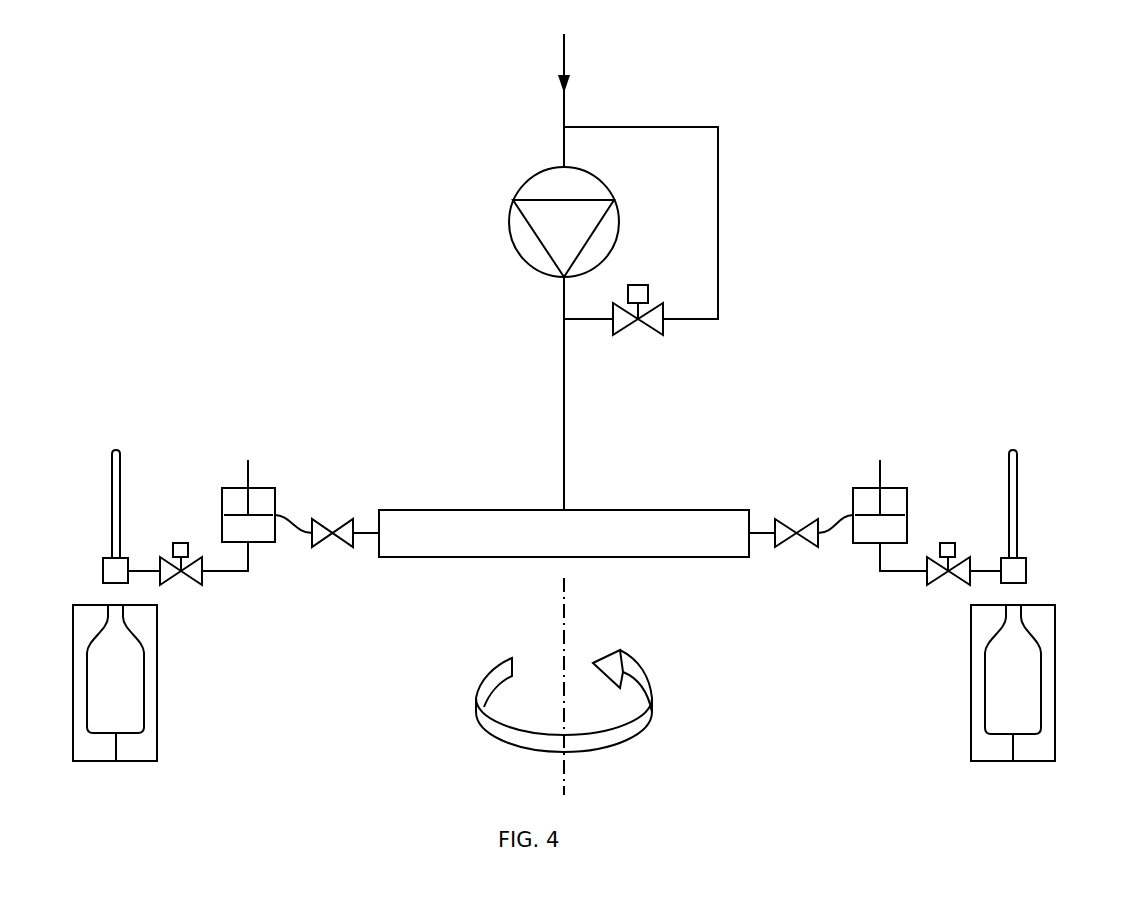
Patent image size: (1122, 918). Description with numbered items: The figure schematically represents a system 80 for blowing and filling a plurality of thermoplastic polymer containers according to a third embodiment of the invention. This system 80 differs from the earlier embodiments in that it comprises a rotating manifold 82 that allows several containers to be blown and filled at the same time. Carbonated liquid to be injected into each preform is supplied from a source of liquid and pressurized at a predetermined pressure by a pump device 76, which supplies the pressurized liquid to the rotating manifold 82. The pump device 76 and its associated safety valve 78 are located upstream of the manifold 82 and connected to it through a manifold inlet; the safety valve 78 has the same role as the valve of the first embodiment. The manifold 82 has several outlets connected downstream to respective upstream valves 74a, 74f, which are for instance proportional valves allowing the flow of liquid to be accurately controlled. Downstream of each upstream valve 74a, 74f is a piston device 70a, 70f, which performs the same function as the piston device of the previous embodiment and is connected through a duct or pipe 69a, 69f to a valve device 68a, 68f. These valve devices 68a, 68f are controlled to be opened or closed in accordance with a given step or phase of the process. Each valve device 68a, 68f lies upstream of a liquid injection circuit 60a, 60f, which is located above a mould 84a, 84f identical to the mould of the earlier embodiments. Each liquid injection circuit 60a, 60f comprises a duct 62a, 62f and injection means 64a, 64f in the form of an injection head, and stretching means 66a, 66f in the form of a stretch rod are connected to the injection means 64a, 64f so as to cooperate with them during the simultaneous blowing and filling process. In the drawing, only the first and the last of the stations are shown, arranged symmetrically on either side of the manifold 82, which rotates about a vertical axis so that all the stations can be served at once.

The liquid injection circuit 60a is at (92, 592).
The liquid injection circuit 60f is at (1038, 592).
The duct 62a is at (146, 568).
The duct 62f is at (982, 568).
The injection means 64a is at (103, 564).
The injection means 64f is at (1026, 564).
The stretching means 66a is at (110, 470).
The stretching means 66f is at (1018, 470).
The valve device 68a is at (176, 586).
The valve device 68f is at (951, 586).
The duct 69a is at (254, 571).
The duct 69f is at (874, 571).
The piston device 70a is at (233, 488).
The piston device 70f is at (895, 488).
The upstream valve 74a is at (341, 520).
The upstream valve 74f is at (788, 520).
The pump device 76 is at (490, 265).
The safety valve 78 is at (646, 336).
The system 80 is at (866, 186).
The rotating manifold 82 is at (665, 510).
The mould 84a is at (182, 712).
The mould 84f is at (948, 712).